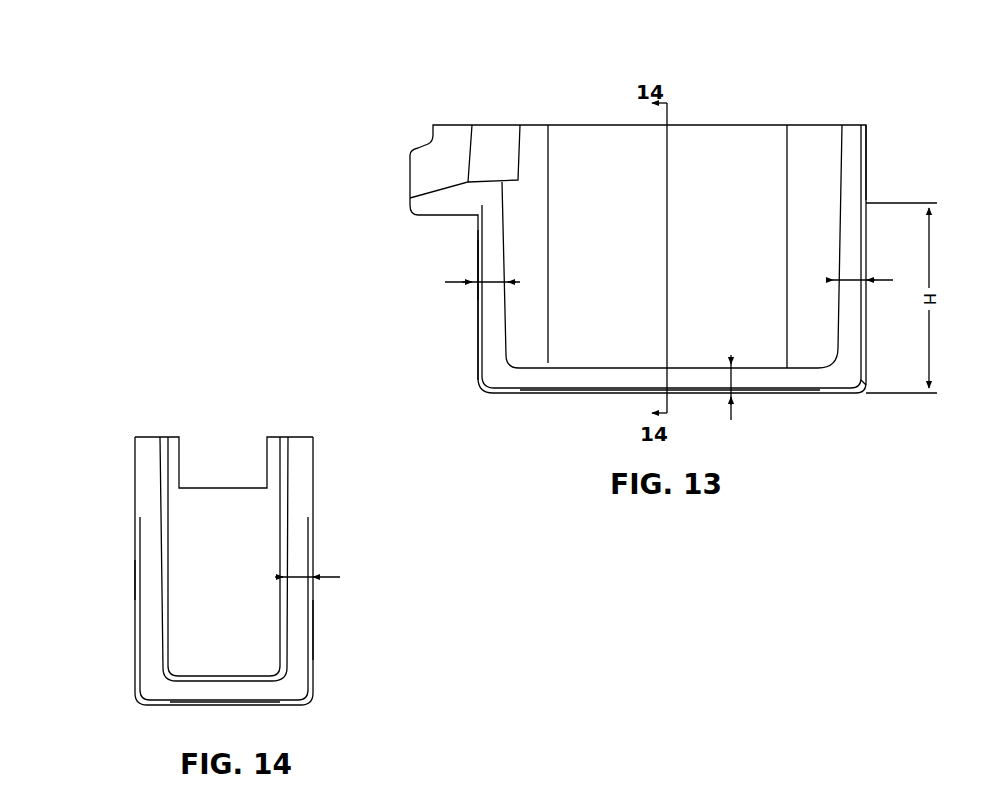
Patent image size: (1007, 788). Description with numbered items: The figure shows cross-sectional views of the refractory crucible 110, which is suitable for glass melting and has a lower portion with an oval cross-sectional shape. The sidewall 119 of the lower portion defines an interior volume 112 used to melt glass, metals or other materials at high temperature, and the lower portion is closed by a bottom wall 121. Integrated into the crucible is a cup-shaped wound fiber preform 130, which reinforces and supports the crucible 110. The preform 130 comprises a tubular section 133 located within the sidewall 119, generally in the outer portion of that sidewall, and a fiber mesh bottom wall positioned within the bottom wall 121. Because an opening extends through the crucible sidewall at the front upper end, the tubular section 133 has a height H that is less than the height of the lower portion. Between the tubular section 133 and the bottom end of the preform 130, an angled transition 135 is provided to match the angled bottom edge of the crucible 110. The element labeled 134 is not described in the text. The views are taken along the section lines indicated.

In FIG. 13, the refractory crucible 110 is at (862, 88).
In FIG. 14, the refractory crucible 110 is at (348, 640).
In FIG. 13, the interior volume 112 is at (729, 272).
In FIG. 14, the interior volume 112 is at (232, 622).
In FIG. 13, the sidewall 119 is at (857, 175).
In FIG. 13, the bottom wall 121 is at (550, 378).
In FIG. 14, the bottom wall 121 is at (163, 690).
In FIG. 13, the wound fiber preform 130 is at (468, 248).
In FIG. 14, the wound fiber preform 130 is at (128, 578).
In FIG. 13, the tubular section 133 is at (483, 330).
In FIG. 13, the outer layer 134 is at (800, 376).
In FIG. 14, the outer layer 134 is at (277, 692).
In FIG. 13, the angled transition 135 is at (856, 390).